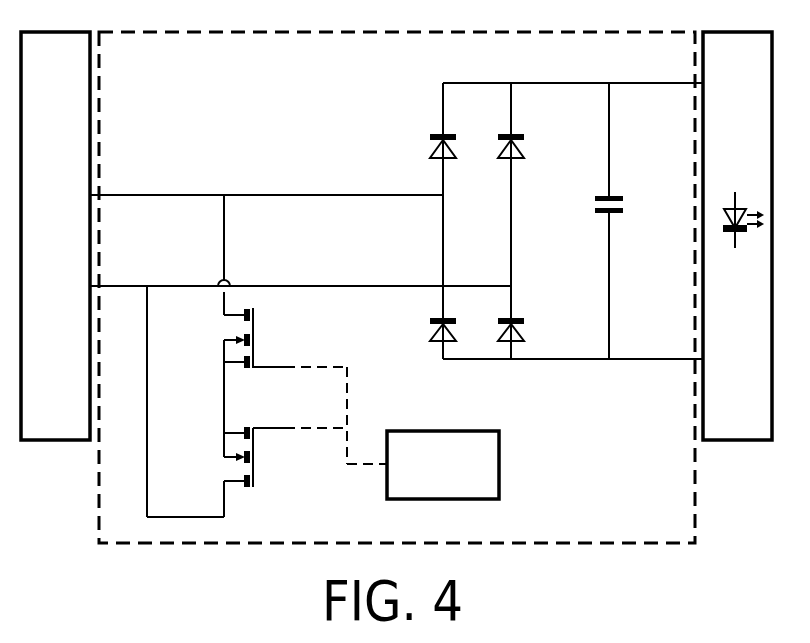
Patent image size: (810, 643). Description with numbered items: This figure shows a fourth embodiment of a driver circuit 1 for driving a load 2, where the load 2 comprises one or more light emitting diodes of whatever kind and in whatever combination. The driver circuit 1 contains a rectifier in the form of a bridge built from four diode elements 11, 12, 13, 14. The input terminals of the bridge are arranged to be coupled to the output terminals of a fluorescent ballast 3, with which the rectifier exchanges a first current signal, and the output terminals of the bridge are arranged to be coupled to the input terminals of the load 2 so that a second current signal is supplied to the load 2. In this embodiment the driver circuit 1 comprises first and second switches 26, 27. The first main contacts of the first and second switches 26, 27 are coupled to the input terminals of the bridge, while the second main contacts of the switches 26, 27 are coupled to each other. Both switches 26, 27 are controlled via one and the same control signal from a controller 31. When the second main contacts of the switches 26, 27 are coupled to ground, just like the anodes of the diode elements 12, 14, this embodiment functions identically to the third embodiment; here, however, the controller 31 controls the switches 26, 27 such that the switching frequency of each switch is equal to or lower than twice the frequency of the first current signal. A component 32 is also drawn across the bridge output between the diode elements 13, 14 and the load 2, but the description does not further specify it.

The driver circuit 1 is at (125, 64).
The load 2 is at (746, 64).
The fluorescent ballast 3 is at (63, 64).
The diode element 11 is at (433, 152).
The diode element 12 is at (433, 336).
The diode element 13 is at (521, 152).
The diode element 14 is at (521, 336).
The first switch 26 is at (256, 342).
The second switch 27 is at (256, 468).
The controller 31 is at (456, 479).
The capacitor 32 is at (598, 214).